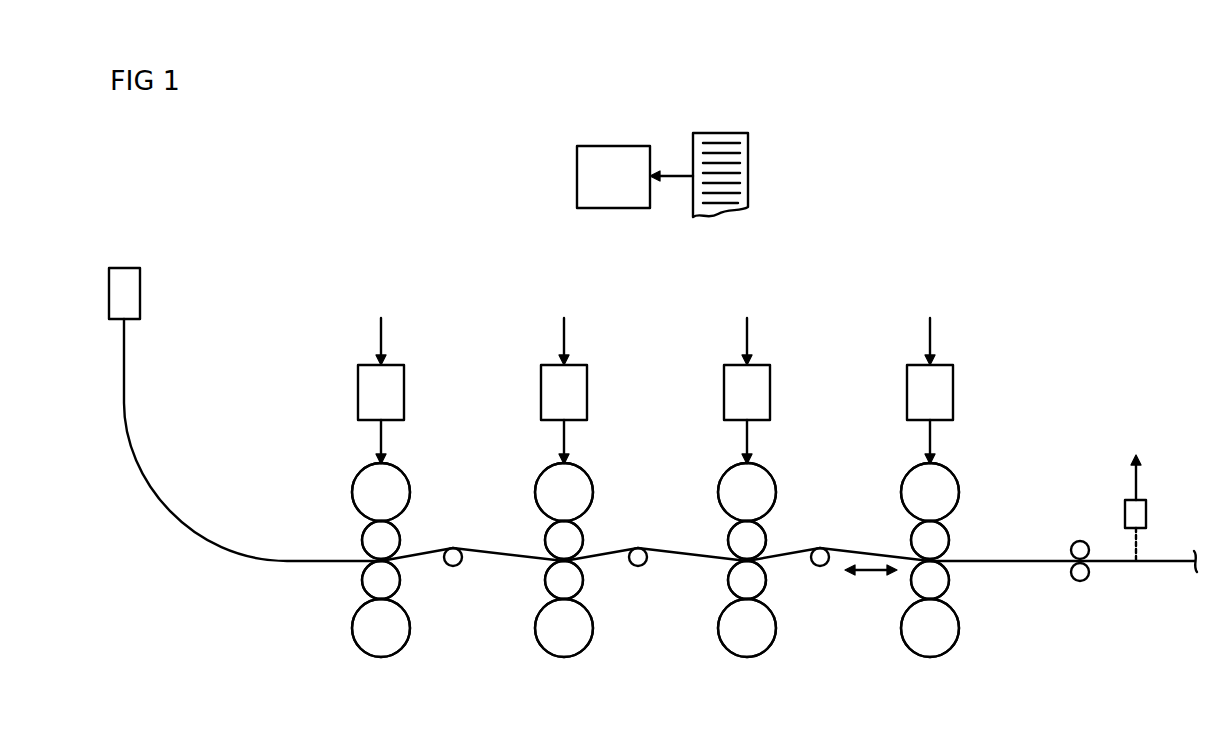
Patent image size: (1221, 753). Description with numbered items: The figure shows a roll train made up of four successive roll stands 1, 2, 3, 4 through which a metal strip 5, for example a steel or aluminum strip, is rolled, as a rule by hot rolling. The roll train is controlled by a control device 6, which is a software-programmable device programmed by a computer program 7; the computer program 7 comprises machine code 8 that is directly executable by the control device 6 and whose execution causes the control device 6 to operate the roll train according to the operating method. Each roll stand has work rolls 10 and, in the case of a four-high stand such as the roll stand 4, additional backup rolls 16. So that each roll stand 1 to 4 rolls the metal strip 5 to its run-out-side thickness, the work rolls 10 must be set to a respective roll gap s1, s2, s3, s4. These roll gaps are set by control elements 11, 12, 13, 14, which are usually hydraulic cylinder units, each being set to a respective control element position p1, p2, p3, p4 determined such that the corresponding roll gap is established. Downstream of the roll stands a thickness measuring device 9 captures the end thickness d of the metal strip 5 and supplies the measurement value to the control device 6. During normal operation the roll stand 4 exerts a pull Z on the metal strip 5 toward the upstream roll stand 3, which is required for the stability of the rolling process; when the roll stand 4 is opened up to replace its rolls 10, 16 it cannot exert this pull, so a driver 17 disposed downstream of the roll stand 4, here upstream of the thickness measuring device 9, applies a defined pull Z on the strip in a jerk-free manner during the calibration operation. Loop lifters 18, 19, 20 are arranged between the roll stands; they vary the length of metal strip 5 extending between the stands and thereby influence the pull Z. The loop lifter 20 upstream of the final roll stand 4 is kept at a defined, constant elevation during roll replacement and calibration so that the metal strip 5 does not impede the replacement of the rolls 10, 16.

The roll stand 1 is at (345, 536).
The roll stand 2 is at (528, 536).
The roll stand 3 is at (711, 536).
The roll stand 4 is at (894, 536).
The metal strip 5 is at (1170, 563).
The control device 6 is at (612, 146).
The computer program 7 is at (740, 144).
The machine code 8 is at (733, 170).
The thickness measuring device 9 is at (1146, 514).
The work rolls 10 is at (362, 586).
The control element 11 is at (358, 394).
The control element 12 is at (541, 394).
The control element 13 is at (724, 394).
The control element 14 is at (907, 394).
The backup rolls 16 is at (352, 490).
The driver 17 is at (1080, 540).
The loop lifter 18 is at (452, 567).
The loop lifter 19 is at (637, 567).
The loop lifter 20 is at (819, 567).
The control element position p1 is at (381, 338).
The control element position p2 is at (564, 338).
The control element position p3 is at (747, 338).
The control element position p4 is at (930, 338).
The roll gap s1 is at (381, 441).
The roll gap s2 is at (564, 441).
The roll gap s3 is at (747, 441).
The roll gap s4 is at (930, 441).
The pull Z is at (872, 575).
The end thickness d is at (1136, 479).